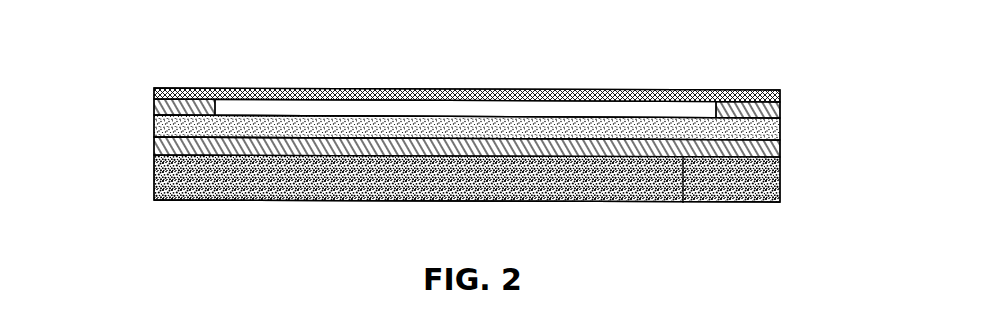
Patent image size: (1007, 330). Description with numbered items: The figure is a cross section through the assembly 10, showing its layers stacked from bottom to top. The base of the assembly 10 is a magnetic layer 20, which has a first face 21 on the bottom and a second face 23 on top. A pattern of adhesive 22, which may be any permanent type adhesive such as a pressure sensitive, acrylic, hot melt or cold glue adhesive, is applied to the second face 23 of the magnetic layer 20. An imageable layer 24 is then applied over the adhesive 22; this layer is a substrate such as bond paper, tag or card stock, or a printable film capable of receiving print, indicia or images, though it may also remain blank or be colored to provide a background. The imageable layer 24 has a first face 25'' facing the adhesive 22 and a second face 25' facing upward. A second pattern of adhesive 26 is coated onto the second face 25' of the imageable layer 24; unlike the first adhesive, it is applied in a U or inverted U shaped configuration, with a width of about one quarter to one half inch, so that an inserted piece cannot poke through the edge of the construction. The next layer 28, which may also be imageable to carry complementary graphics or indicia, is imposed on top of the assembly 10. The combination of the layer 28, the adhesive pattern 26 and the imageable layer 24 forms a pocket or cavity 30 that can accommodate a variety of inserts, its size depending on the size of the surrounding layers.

The assembly 10 is at (784, 87).
The magnetic layer 20 is at (218, 160).
The first face 21 is at (663, 203).
The pattern of adhesive 22 is at (753, 146).
The second face 23 is at (683, 203).
The imageable layer 24 is at (468, 127).
The second face 25' is at (407, 104).
The first face 25'' is at (407, 152).
The second pattern of adhesive 26 is at (752, 110).
The next layer 28 is at (420, 90).
The cavity 30 is at (597, 108).